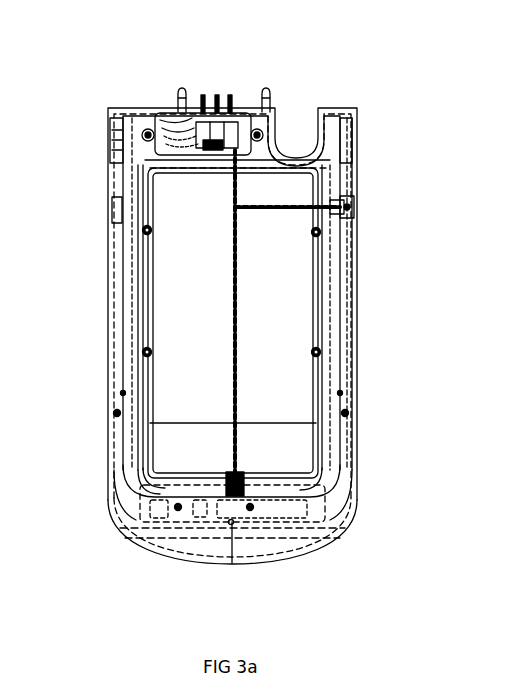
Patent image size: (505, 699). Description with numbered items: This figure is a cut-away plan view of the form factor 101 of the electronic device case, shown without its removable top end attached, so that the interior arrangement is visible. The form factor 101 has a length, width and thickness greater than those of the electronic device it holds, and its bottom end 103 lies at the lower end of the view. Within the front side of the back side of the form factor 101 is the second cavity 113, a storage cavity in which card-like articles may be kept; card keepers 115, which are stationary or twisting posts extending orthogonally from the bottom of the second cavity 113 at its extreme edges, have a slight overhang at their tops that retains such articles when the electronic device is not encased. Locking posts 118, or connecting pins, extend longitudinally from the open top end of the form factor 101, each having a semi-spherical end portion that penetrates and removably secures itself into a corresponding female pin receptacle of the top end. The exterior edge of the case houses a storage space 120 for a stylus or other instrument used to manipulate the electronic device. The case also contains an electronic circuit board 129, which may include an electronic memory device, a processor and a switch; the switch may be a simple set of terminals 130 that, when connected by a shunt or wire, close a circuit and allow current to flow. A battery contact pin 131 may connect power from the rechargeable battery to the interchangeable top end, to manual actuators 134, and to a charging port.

The form factor 101 is at (292, 336).
The bottom end 103 is at (232, 565).
The second cavity 113 is at (210, 350).
The card keepers 115 is at (225, 320).
The locking posts 118 is at (222, 71).
The space 120 is at (165, 517).
The electronic circuit board 129 is at (276, 103).
The terminals 130 is at (226, 75).
The battery contact pin 131 is at (134, 86).
The manual actuators 134 is at (395, 191).